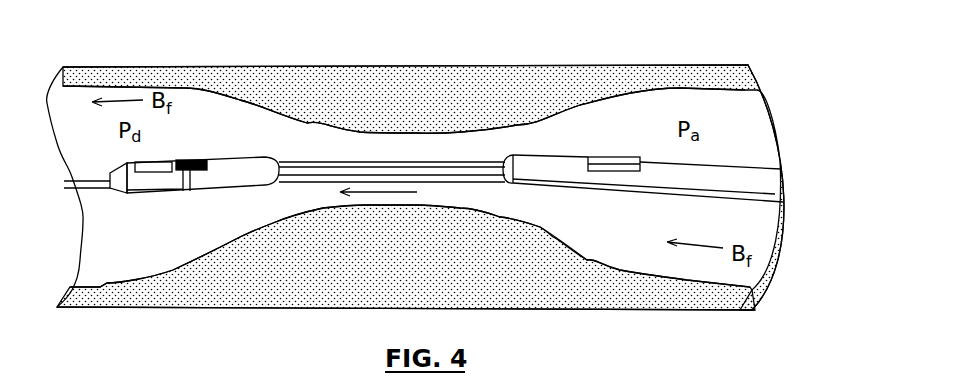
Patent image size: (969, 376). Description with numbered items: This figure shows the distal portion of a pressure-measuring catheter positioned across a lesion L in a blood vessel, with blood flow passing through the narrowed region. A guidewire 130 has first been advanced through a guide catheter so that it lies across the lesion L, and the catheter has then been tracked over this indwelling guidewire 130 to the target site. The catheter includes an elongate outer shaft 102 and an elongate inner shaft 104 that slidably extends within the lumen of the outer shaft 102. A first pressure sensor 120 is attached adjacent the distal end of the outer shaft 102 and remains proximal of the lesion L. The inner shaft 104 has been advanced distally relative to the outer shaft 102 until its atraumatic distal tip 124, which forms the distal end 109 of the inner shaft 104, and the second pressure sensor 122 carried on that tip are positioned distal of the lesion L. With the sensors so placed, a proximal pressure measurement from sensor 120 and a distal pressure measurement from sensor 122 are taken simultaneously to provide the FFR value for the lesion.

The outer shaft 102 is at (643, 210).
The inner shaft 104 is at (302, 186).
The distal end 109 is at (105, 194).
The first pressure sensor 120 is at (618, 157).
The second pressure sensor 122 is at (172, 158).
The distal tip 124 is at (158, 198).
The guidewire 130 is at (93, 178).
The lesion L is at (307, 80).